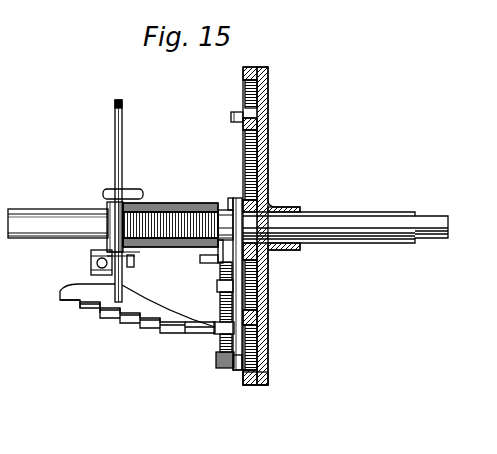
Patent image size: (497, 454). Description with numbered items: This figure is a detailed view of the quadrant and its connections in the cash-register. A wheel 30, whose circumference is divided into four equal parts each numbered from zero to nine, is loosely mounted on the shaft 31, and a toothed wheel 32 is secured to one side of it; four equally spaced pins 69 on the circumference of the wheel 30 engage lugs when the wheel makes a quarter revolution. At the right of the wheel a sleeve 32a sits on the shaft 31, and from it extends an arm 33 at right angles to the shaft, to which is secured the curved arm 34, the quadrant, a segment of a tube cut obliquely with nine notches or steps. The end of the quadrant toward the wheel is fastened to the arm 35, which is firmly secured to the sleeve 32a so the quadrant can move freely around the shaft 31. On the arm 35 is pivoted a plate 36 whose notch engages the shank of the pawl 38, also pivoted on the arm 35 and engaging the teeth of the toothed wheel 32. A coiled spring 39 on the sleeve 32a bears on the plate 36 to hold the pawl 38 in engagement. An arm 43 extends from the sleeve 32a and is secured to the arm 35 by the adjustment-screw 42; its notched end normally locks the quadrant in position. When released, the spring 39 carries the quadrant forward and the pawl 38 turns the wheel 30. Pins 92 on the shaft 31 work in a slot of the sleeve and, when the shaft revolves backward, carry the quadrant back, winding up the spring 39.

The shaft 31 is at (58, 223).
The coiled spring 39 is at (170, 238).
The arm 43 is at (123, 135).
The adjustment-screw 42 is at (89, 263).
The arm 33 is at (130, 291).
The curved arm (quadrant) 34 is at (137, 328).
The pins 92 is at (211, 268).
The plate 36 is at (224, 298).
The sleeve 32a is at (230, 203).
The arm 35 is at (235, 371).
The toothed wheel 32 is at (268, 314).
The pins 69 is at (231, 118).
The wheel 30 is at (270, 376).
The pawl 38 is at (265, 387).